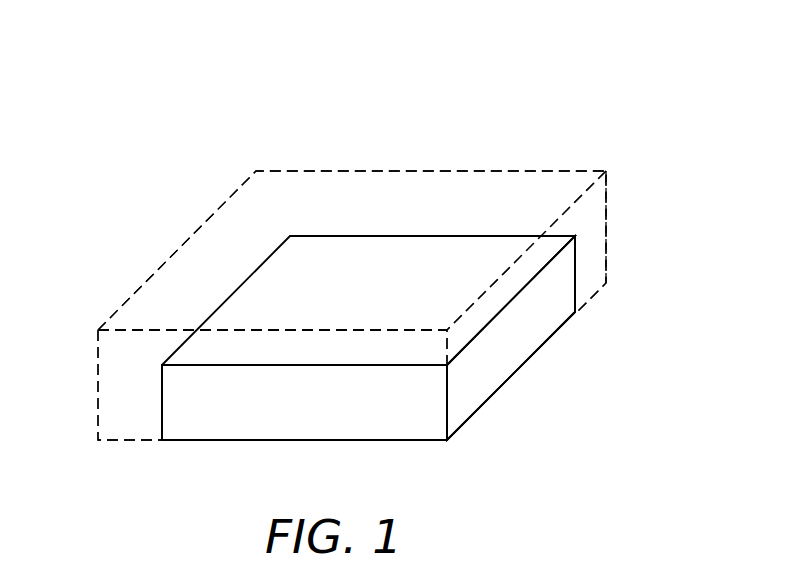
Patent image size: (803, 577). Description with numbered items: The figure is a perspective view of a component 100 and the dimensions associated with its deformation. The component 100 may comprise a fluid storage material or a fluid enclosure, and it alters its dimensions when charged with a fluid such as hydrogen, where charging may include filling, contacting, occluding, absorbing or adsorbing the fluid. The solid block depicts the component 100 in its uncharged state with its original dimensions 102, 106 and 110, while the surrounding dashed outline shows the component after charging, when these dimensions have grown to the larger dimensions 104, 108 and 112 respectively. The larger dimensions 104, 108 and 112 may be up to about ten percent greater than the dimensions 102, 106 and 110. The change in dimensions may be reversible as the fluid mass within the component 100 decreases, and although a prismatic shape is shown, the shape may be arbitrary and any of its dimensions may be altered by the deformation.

The component 100 is at (138, 180).
The dimension 102 is at (162, 402).
The larger dimension 104 is at (98, 385).
The dimension 106 is at (305, 366).
The larger dimension 108 is at (337, 329).
The dimension 110 is at (512, 377).
The larger dimension 112 is at (577, 198).